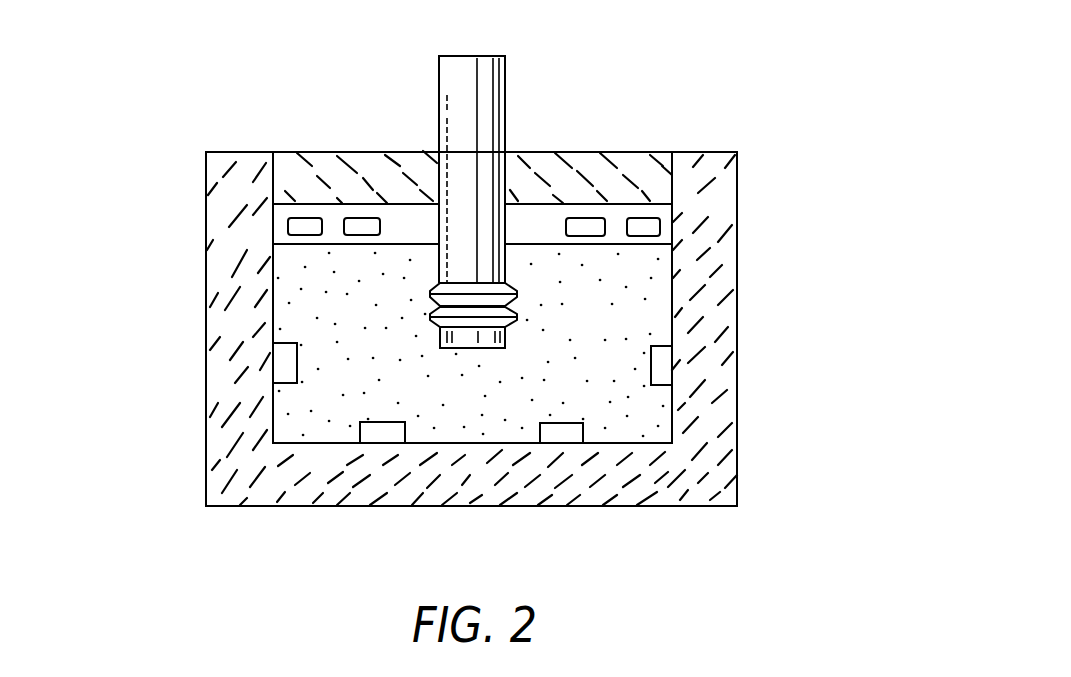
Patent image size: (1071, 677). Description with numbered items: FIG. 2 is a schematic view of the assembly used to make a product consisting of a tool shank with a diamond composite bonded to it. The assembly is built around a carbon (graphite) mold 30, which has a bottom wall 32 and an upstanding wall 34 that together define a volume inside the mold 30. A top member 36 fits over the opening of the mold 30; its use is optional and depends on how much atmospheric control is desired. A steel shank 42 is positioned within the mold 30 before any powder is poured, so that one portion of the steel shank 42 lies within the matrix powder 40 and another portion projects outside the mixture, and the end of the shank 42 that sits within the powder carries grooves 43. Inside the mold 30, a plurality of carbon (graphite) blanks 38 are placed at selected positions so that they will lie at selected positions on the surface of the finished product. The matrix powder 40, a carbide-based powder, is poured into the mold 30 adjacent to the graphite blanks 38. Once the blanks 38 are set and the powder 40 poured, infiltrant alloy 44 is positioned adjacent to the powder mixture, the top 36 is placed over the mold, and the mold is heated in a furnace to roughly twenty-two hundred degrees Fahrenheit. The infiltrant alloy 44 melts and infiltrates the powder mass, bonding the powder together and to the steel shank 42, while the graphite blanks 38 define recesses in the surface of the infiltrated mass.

The mold 30 is at (172, 335).
The bottom wall 32 is at (655, 500).
The upstanding wall 34 is at (728, 328).
The top member 36 is at (615, 165).
The carbon (graphite) blanks 38 is at (277, 365).
The matrix powder 40 is at (657, 278).
The steel shank 42 is at (439, 89).
The grooves 43 is at (435, 305).
The infiltrant alloy 44 is at (292, 228).